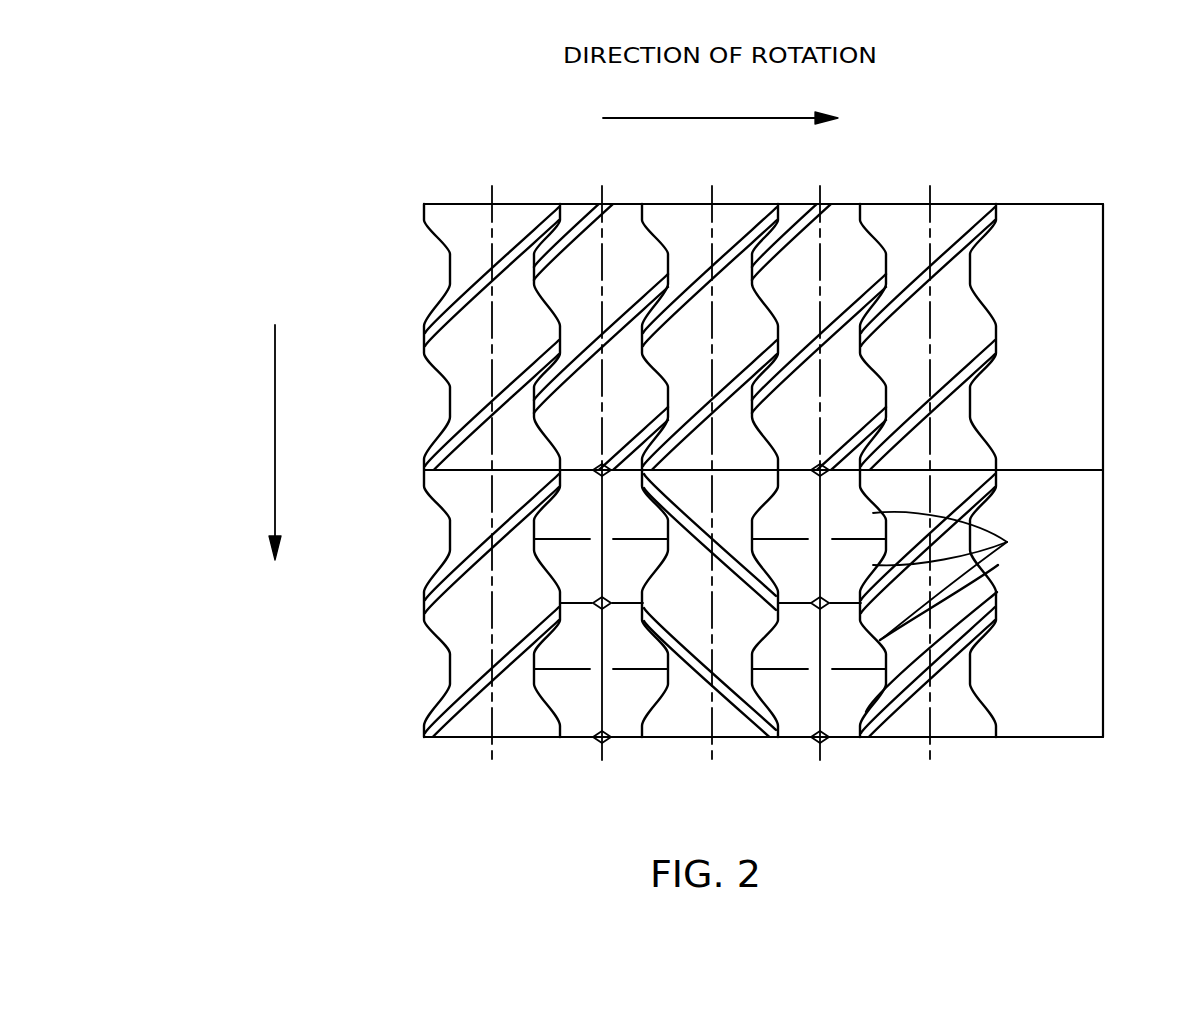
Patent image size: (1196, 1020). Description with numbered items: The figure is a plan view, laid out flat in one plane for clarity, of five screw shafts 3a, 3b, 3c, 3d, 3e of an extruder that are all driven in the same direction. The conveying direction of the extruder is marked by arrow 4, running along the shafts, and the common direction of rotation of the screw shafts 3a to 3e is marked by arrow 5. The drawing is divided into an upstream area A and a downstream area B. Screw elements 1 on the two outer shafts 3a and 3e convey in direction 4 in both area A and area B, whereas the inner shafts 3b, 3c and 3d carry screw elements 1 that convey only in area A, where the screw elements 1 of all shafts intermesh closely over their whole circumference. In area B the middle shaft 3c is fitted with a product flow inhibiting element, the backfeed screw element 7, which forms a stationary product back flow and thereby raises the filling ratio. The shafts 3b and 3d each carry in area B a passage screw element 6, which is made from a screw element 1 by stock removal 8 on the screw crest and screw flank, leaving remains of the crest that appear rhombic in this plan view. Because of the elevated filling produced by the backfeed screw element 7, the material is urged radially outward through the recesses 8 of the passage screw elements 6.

The screw element 1 is at (957, 210).
The screw shaft 3a is at (496, 509).
The screw shaft 3b is at (606, 509).
The screw shaft 3c is at (716, 509).
The screw shaft 3d is at (825, 509).
The screw shaft 3e is at (935, 509).
The conveying direction arrow 4 is at (275, 400).
The direction of rotation arrow 5 is at (757, 118).
The passage screw element 6 is at (582, 726).
The backfeed screw element 7 is at (692, 726).
The stock removal 8 is at (1007, 542).
The area A is at (1103, 330).
The area B is at (1104, 572).